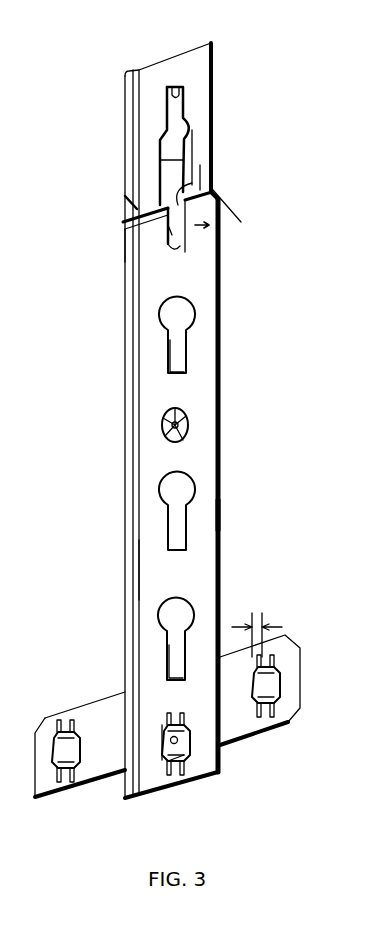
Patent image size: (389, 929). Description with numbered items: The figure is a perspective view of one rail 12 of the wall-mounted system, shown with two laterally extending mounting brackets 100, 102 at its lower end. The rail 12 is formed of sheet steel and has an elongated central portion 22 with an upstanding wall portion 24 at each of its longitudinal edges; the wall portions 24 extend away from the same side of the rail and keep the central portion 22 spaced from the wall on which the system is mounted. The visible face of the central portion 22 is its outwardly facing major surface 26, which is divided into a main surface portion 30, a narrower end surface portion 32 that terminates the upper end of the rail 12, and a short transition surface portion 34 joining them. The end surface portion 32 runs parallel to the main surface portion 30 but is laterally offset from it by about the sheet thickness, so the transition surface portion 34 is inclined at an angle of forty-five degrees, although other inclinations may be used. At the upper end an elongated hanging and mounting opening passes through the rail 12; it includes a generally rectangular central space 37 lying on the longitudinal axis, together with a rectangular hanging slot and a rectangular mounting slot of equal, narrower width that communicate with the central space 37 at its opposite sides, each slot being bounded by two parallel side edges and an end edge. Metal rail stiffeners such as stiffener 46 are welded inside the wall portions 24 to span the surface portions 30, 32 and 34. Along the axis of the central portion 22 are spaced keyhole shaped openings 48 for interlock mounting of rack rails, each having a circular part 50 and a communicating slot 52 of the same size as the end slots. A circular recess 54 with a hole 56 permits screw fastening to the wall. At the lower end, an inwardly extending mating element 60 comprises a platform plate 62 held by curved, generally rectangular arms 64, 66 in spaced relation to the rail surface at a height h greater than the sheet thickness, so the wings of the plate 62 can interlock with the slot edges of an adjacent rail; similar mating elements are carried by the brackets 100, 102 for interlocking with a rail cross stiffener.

The rail 12 is at (246, 290).
The elongated central portion 22 is at (222, 433).
The upstanding wall portion 24 is at (133, 387).
The major surface 26 is at (157, 567).
The main surface portion 30 is at (200, 254).
The end surface portion 32 is at (200, 122).
The transition surface portion 34 is at (127, 199).
The central space 37 is at (175, 163).
The rail stiffener 46 is at (126, 223).
The keyhole shaped opening 48 is at (205, 511).
The circular part 50 is at (180, 315).
The slot 52 is at (180, 356).
The circular recess 54 is at (168, 437).
The hole 56 is at (178, 427).
The mating element 60 is at (222, 758).
The platform plate 62 is at (170, 748).
The arm 64 is at (177, 722).
The arm 66 is at (180, 762).
The mounting bracket 100 is at (88, 705).
The mounting bracket 102 is at (265, 732).
The height h is at (257, 614).